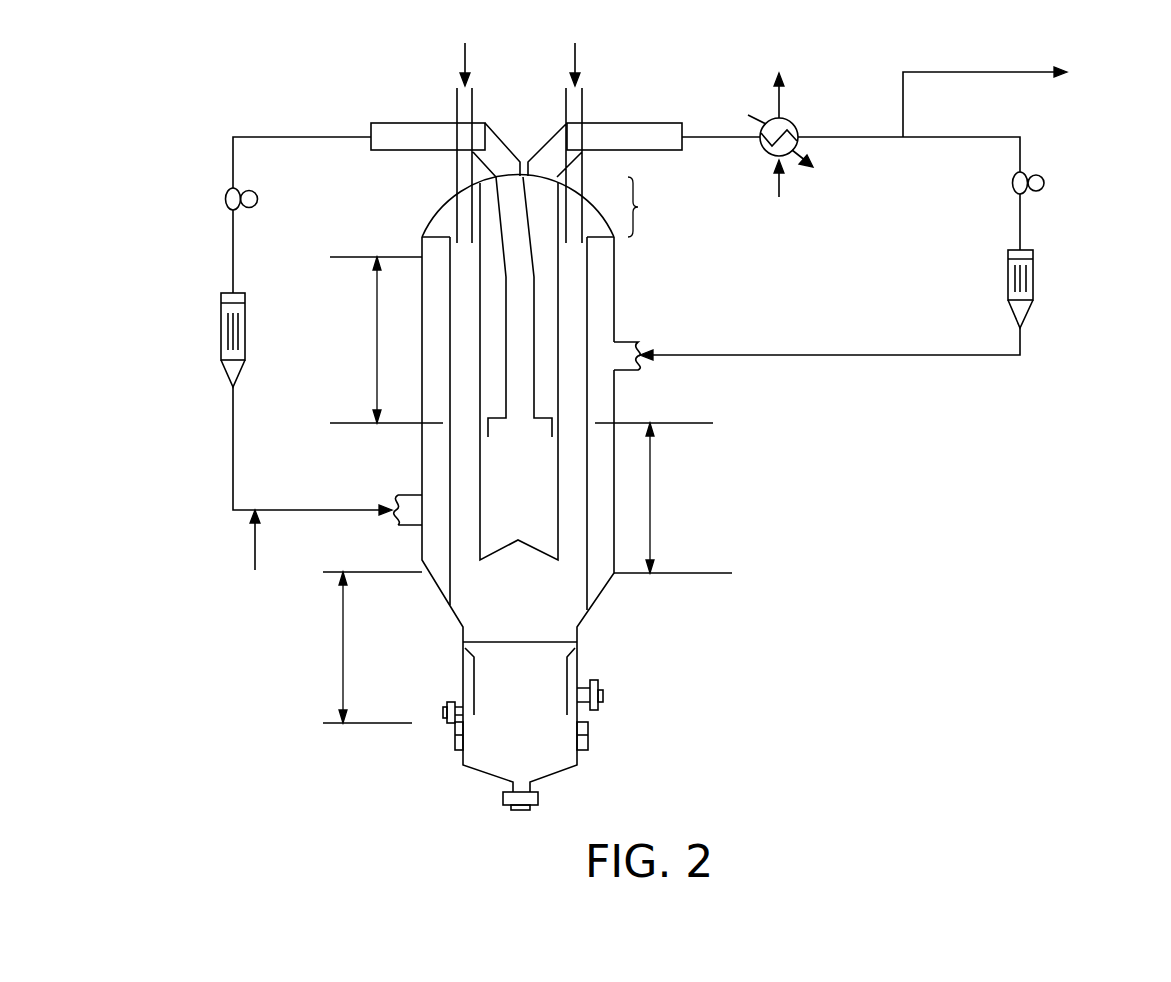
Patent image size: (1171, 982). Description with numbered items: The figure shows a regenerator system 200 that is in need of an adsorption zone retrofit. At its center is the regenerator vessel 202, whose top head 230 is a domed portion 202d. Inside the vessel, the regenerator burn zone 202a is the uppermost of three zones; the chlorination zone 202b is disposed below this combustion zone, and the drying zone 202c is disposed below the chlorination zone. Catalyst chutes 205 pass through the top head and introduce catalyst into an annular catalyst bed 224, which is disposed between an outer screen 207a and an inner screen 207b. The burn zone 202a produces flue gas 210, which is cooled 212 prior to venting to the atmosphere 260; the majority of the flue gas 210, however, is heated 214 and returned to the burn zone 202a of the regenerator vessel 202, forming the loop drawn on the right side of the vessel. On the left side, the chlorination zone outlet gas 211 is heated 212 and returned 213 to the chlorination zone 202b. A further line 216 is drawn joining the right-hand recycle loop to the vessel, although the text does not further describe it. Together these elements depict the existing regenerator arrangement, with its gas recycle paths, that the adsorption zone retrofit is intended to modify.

The regenerator system 200 is at (178, 156).
The regenerator vessel 202 is at (357, 188).
The regenerator burn zone 202a is at (377, 341).
The chlorination zone 202b is at (652, 498).
The drying zone 202c is at (343, 648).
The domed portion 202d is at (640, 207).
The catalyst chutes 205 is at (473, 92).
The outer screen 207a is at (590, 360).
The inner screen 207b is at (559, 388).
The flue gas 210 is at (643, 123).
The chlorination zone outlet gas 211 is at (400, 123).
The cooling/heating step 212 is at (221, 328).
The return 213 is at (233, 447).
The heating step 214 is at (1035, 278).
The recycle return line 216 is at (948, 355).
The annular catalyst bed 224 is at (568, 268).
The top head 230 is at (422, 236).
The atmosphere 260 is at (985, 72).